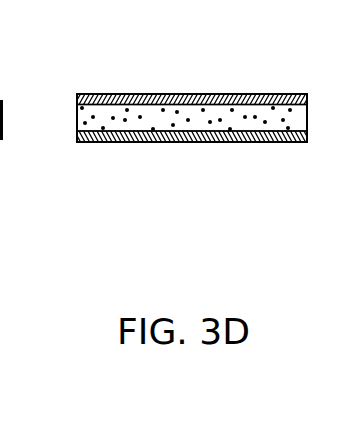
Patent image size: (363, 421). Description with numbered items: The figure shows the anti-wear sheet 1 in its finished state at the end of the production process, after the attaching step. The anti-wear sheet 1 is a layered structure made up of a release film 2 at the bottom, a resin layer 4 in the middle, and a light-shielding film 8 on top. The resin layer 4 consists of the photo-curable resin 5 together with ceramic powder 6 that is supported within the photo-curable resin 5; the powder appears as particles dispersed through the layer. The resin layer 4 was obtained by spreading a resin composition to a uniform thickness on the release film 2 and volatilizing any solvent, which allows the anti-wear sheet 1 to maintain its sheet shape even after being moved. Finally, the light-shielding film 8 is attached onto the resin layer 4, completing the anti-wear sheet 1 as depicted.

The anti-wear sheet 1 is at (303, 49).
The release film 2 is at (238, 142).
The resin layer 4 is at (307, 114).
The photo-curable resin 5 is at (138, 132).
The ceramic powder 6 is at (122, 122).
The light-shielding film 8 is at (238, 94).